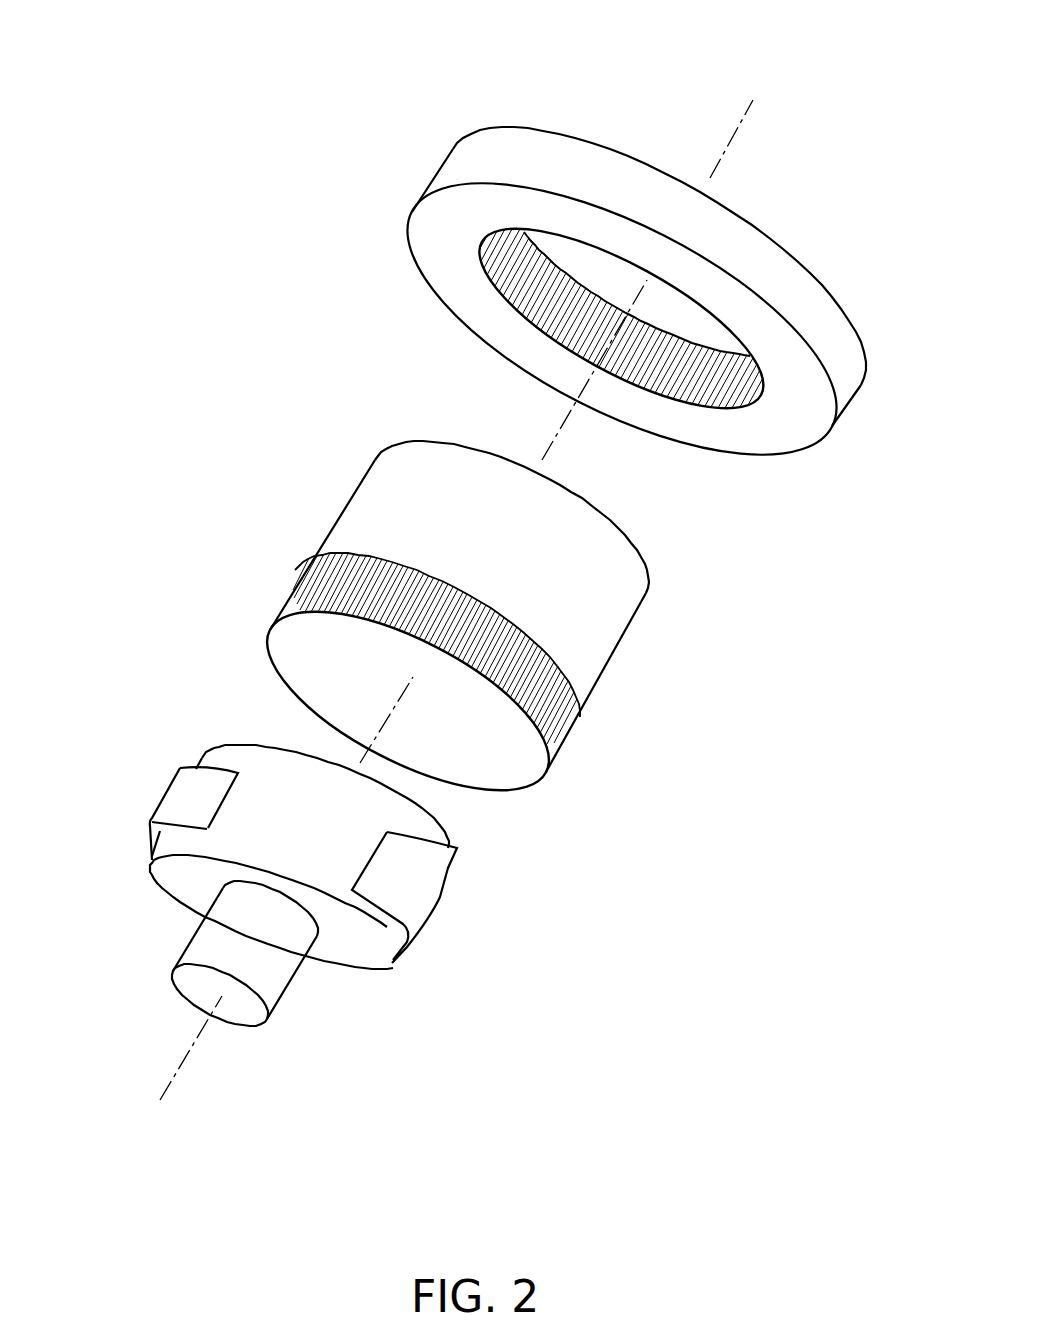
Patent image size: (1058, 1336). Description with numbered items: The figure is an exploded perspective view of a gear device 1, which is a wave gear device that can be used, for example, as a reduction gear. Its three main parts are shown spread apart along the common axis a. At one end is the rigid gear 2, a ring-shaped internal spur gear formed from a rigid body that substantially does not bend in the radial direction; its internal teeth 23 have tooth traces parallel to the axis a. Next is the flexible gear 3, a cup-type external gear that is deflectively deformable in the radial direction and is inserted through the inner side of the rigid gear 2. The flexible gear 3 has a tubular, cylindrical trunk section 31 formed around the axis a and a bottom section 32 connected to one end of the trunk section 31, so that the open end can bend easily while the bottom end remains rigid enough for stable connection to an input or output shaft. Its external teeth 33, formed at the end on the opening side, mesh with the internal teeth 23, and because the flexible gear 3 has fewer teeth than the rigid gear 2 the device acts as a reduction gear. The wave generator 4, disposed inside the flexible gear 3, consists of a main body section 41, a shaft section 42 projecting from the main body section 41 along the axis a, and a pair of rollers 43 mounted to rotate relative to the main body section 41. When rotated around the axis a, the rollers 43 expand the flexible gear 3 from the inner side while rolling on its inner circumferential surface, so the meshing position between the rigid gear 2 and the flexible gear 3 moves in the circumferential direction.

The gear device 1 is at (235, 198).
The rigid gear 2 is at (500, 110).
The internal teeth 23 is at (692, 375).
The flexible gear 3 is at (340, 506).
The trunk section 31 is at (367, 468).
The bottom section 32 is at (600, 516).
The external teeth 33 is at (557, 713).
The wave generator 4 is at (237, 738).
The main body section 41 is at (440, 842).
The shaft section 42 is at (277, 975).
The rollers 43 is at (183, 800).
The axis a is at (216, 1098).